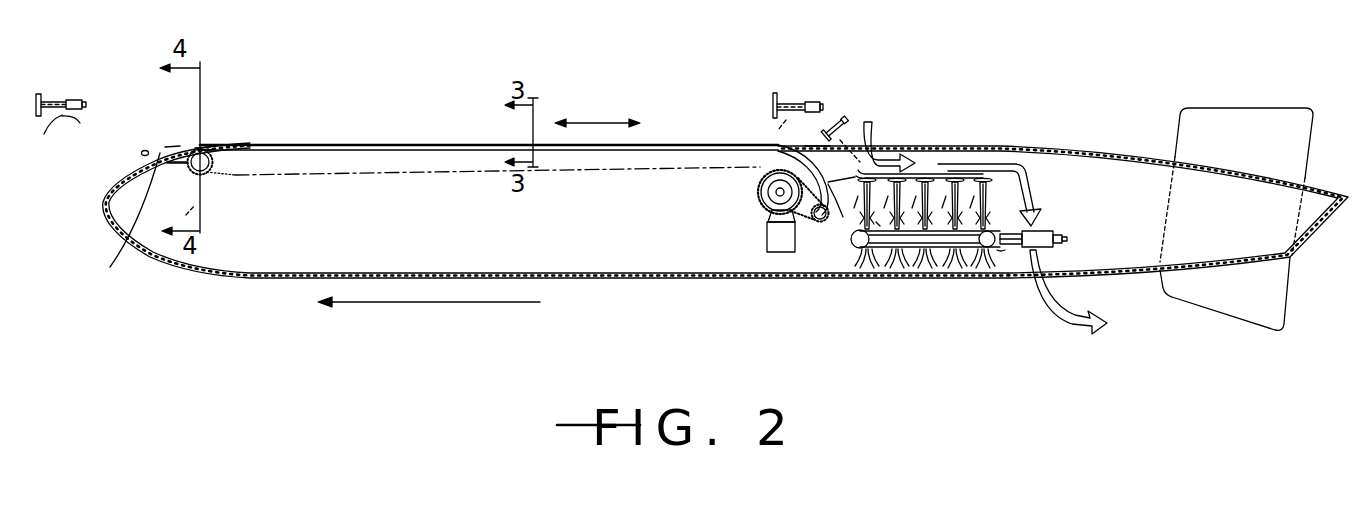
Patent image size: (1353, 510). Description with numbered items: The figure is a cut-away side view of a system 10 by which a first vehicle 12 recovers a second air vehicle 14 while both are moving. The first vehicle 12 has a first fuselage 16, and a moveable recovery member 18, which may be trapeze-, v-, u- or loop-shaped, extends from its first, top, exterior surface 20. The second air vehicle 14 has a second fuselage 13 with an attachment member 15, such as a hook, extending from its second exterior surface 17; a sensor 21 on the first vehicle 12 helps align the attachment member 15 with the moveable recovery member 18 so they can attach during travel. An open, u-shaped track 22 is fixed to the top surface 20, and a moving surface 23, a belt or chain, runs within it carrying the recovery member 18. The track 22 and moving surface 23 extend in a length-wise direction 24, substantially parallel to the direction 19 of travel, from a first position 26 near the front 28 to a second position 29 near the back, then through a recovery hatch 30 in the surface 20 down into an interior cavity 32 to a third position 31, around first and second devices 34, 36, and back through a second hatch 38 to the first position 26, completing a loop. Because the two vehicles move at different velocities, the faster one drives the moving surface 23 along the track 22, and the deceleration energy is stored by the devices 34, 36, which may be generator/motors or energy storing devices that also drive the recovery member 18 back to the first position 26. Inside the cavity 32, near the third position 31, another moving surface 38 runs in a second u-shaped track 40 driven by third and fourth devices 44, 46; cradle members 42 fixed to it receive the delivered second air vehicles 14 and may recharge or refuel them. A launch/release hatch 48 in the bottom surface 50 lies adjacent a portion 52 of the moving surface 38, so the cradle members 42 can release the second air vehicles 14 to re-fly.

The system 10 is at (211, 90).
The first vehicle 12 is at (460, 143).
The second fuselage 13 is at (53, 96).
The second air vehicle 14 is at (43, 100).
The attachment member 15 is at (43, 138).
The first fuselage 16 is at (318, 143).
The second exterior surface 17 is at (77, 132).
The moveable recovery member 18 is at (212, 109).
The direction of travel 19 is at (465, 303).
The first, top, exterior surface 20 is at (203, 148).
The sensor 21 is at (143, 151).
The track 22 is at (365, 143).
The moving surface 23 is at (410, 143).
The length-wise direction 24 is at (595, 121).
The first position 26 is at (202, 147).
The front 28 is at (173, 145).
The second position 29 is at (779, 145).
The recovery hatch 30 is at (817, 142).
The third position 31 is at (876, 160).
The interior cavity 32 is at (843, 217).
The first device 34 is at (760, 195).
The second device 36 is at (122, 225).
The second hatch / another moving surface 38 is at (190, 163).
The second track 40 is at (958, 227).
The cradle member 42 is at (922, 228).
The third device 44 is at (878, 225).
The fourth device 46 is at (994, 235).
The launch/release hatch 48 is at (1077, 277).
The bottom surface 50 is at (1130, 272).
The portion of the moving surface 52 is at (997, 250).